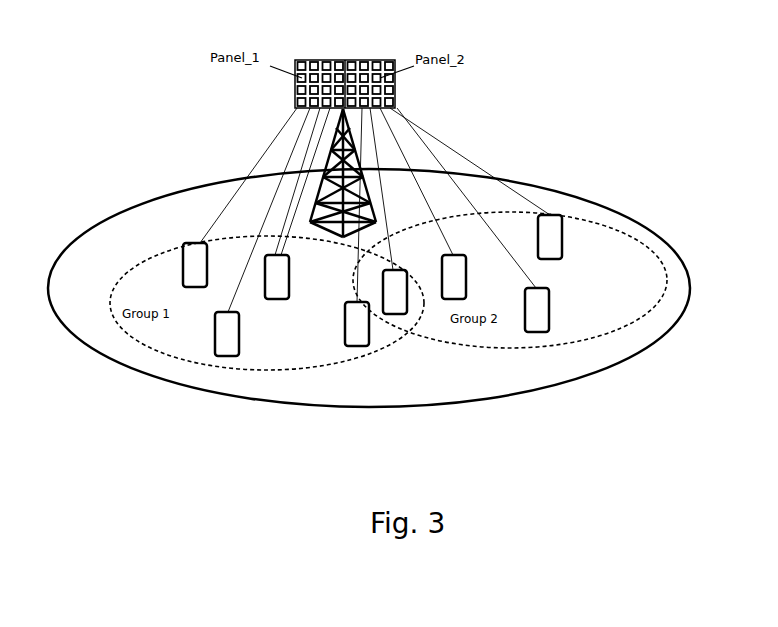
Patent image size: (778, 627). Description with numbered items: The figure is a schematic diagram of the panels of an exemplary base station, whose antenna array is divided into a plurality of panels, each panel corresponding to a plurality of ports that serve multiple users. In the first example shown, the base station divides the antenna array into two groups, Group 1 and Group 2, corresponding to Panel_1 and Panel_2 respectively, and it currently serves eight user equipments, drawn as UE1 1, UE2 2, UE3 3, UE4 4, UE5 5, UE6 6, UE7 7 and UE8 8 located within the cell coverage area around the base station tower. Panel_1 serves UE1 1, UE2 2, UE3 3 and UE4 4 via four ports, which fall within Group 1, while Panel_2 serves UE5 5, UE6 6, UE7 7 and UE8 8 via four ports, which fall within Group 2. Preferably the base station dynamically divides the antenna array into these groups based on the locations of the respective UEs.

The UE1 1 is at (277, 277).
The UE2 2 is at (227, 334).
The UE3 3 is at (357, 324).
The UE4 4 is at (195, 265).
The UE5 5 is at (395, 292).
The UE6 6 is at (454, 277).
The UE7 7 is at (550, 237).
The UE8 8 is at (537, 310).